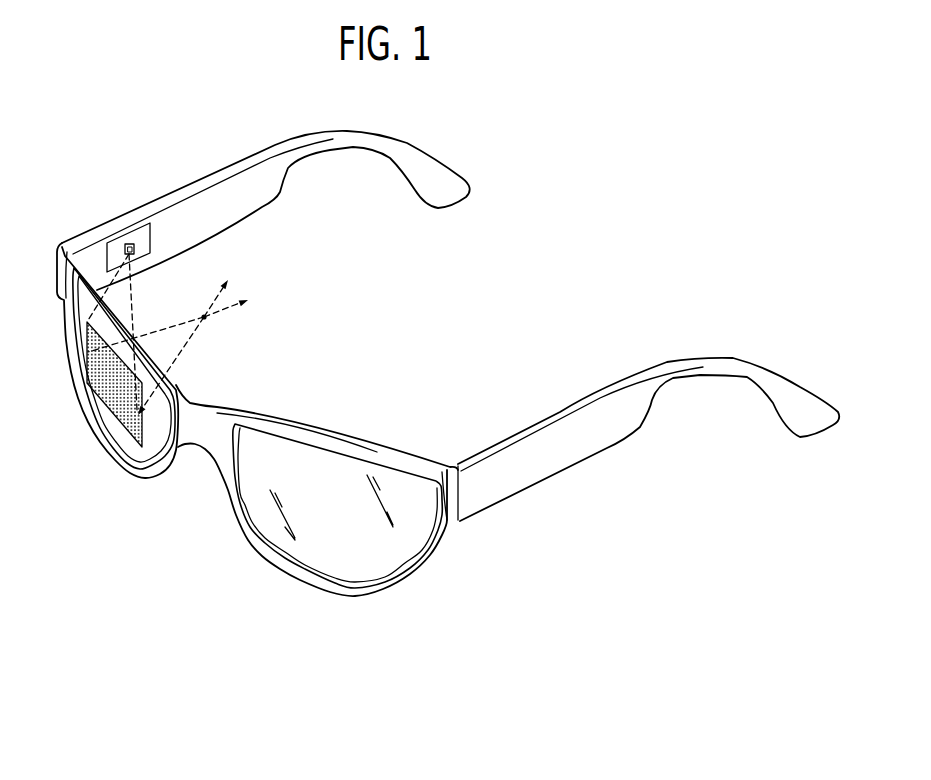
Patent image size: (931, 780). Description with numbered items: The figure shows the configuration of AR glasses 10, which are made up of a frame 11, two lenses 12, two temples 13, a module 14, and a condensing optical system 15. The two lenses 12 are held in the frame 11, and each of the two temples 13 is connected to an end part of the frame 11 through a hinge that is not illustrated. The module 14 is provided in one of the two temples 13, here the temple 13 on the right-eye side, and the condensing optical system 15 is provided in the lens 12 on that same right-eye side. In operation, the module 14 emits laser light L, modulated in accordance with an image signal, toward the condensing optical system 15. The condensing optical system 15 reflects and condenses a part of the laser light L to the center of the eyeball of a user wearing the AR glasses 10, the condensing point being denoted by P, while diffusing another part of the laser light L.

The AR glasses 10 is at (588, 175).
The frame 11 is at (280, 416).
The lens 12 is at (117, 440).
The temple 13 is at (193, 183).
The module 14 is at (138, 226).
The condensing optical system 15 is at (112, 394).
The laser light L is at (133, 300).
The condensing point P is at (209, 321).